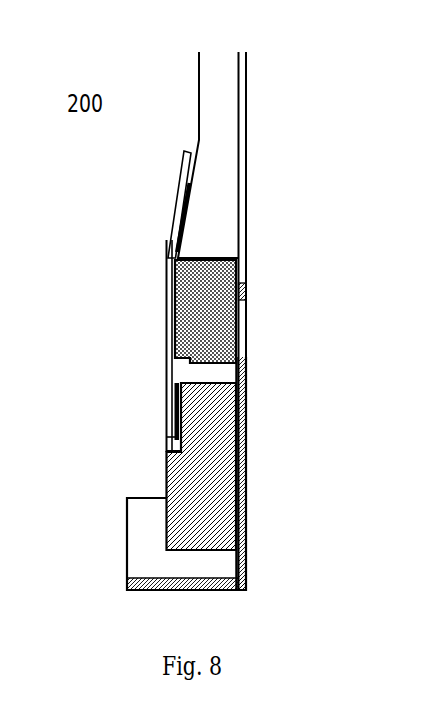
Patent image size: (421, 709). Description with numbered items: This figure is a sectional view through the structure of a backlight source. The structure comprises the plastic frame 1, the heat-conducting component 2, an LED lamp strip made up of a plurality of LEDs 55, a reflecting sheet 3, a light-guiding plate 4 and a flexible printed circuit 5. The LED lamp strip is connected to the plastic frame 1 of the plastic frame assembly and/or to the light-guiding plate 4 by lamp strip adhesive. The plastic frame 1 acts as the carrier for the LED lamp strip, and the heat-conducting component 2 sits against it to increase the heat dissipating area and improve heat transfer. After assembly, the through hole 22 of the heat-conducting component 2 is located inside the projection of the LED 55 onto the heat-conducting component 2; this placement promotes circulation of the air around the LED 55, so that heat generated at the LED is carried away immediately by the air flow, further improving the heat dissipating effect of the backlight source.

The plastic frame 1 is at (172, 462).
The heat-conducting component 2 is at (246, 537).
The reflecting sheet 3 is at (243, 183).
The light-guiding plate 4 is at (218, 222).
The flexible printed circuit 5 is at (166, 288).
The through hole 22 is at (238, 333).
The LED 55 is at (235, 326).